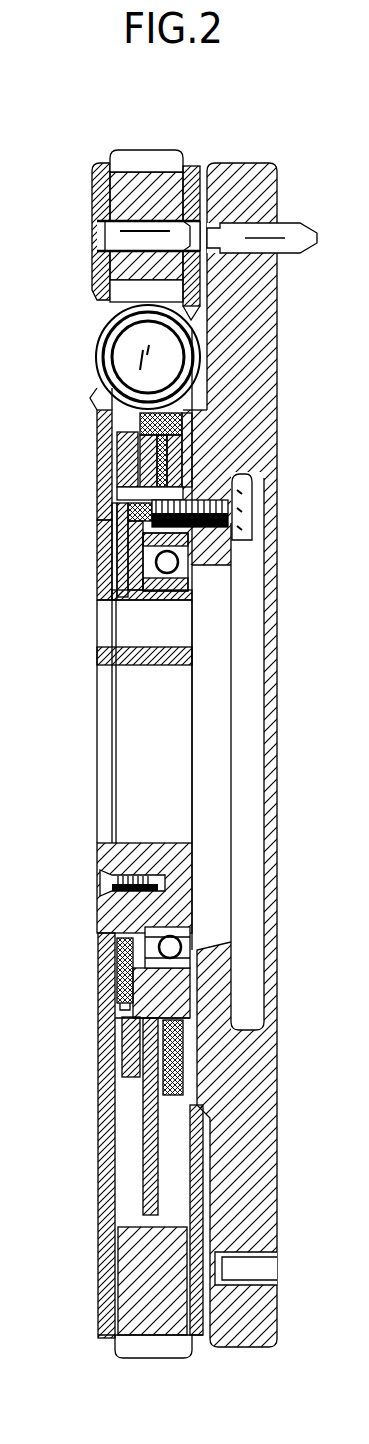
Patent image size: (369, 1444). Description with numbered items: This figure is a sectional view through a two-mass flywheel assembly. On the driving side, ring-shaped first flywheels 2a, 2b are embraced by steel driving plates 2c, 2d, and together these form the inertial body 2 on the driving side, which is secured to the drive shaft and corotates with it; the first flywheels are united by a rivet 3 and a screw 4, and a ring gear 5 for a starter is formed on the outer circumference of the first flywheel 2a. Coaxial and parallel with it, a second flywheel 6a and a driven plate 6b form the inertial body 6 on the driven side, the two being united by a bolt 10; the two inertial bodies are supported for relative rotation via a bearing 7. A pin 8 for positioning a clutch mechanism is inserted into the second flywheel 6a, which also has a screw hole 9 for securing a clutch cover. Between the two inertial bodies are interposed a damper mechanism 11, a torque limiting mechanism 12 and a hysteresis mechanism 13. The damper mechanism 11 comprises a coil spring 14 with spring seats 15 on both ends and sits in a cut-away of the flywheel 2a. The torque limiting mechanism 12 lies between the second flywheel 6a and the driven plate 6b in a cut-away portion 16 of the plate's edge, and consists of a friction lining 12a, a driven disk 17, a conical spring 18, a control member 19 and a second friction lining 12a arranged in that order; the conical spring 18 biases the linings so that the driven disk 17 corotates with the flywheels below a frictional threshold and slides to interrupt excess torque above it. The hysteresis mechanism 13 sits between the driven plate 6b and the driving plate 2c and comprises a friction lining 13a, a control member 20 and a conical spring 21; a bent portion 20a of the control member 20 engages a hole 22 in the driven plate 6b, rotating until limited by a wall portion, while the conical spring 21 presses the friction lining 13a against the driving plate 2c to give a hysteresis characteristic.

The inertial body on the driving side 2 is at (90, 200).
The first flywheel 2a is at (138, 178).
The first flywheel 2b is at (190, 593).
The driving plate 2c is at (100, 175).
The driving plate 2d is at (197, 172).
The rivet 3 is at (120, 237).
The screw 4 is at (107, 882).
The ring gear 5 is at (167, 157).
The inertial body on the driven side 6 is at (288, 353).
The second flywheel 6a is at (262, 287).
The driven plate 6b is at (253, 492).
The bearing 7 is at (205, 587).
The pin 8 is at (315, 237).
The screw hole 9 is at (265, 1275).
The bolt 10 is at (240, 513).
The damper mechanism 11 is at (88, 370).
The torque limiting mechanism 12 is at (208, 435).
The friction lining 12a is at (180, 418).
The hysteresis mechanism 13 is at (88, 562).
The friction lining 13a is at (105, 582).
The coil spring 14 is at (195, 330).
The spring seat 15 is at (125, 353).
The cut-away portion 16 is at (122, 1037).
The driven disk 17 is at (118, 447).
The conical spring 18 is at (122, 490).
The control member 19 is at (187, 460).
The control member 20 is at (115, 547).
The bent portion 20a is at (115, 510).
The conical spring 21 is at (98, 642).
The hole 22 is at (187, 542).